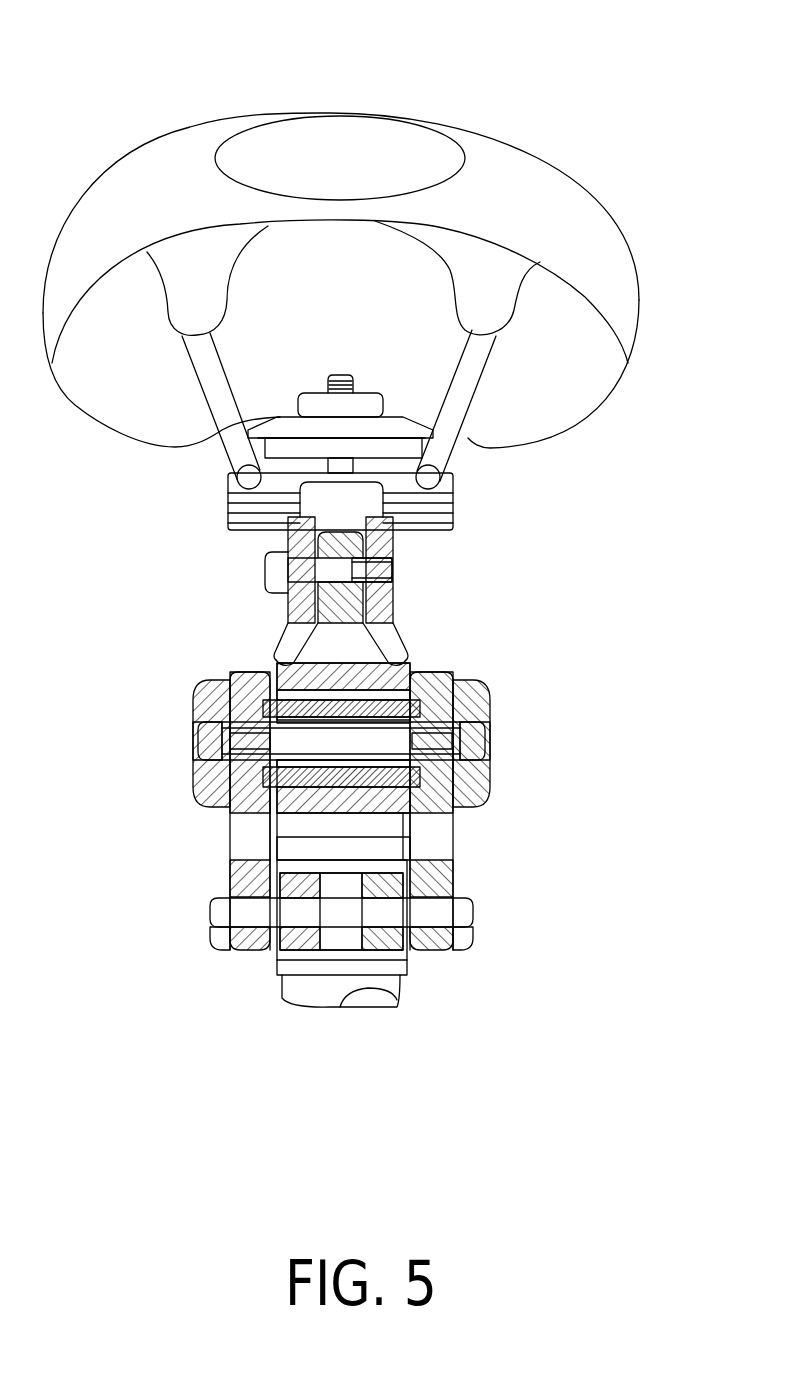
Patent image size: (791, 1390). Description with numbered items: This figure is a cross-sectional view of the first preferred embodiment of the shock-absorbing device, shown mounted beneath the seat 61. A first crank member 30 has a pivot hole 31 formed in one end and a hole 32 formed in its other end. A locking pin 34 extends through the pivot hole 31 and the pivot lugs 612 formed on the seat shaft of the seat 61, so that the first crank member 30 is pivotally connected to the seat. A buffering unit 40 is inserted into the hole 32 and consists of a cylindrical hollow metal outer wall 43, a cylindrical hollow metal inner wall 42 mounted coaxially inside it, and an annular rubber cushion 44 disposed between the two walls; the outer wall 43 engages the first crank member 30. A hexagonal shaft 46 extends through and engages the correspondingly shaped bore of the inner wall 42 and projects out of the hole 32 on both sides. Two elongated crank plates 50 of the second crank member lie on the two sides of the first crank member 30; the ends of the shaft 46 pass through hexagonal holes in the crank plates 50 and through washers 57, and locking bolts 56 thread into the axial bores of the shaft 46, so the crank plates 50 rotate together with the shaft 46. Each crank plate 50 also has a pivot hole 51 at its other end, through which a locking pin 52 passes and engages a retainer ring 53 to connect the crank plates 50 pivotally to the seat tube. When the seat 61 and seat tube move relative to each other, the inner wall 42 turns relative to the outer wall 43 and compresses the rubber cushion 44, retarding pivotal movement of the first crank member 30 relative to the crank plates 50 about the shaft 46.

The seat 61 is at (540, 178).
The pivot lugs 612 is at (303, 527).
The pivot hole 31 is at (393, 590).
The locking pin 34 is at (268, 568).
The first crank member 30 is at (397, 639).
The buffering unit 40 is at (304, 682).
The outer wall 43 is at (410, 660).
The rubber cushion 44 is at (418, 690).
The inner wall 42 is at (420, 708).
The shaft 46 is at (277, 737).
The locking bolts 56 is at (477, 741).
The washers 57 is at (465, 800).
The crank plates 50 is at (220, 848).
The hole 32 is at (305, 815).
The locking pin 52 is at (469, 908).
The pivot hole 51 is at (257, 940).
The retainer ring 53 is at (295, 942).